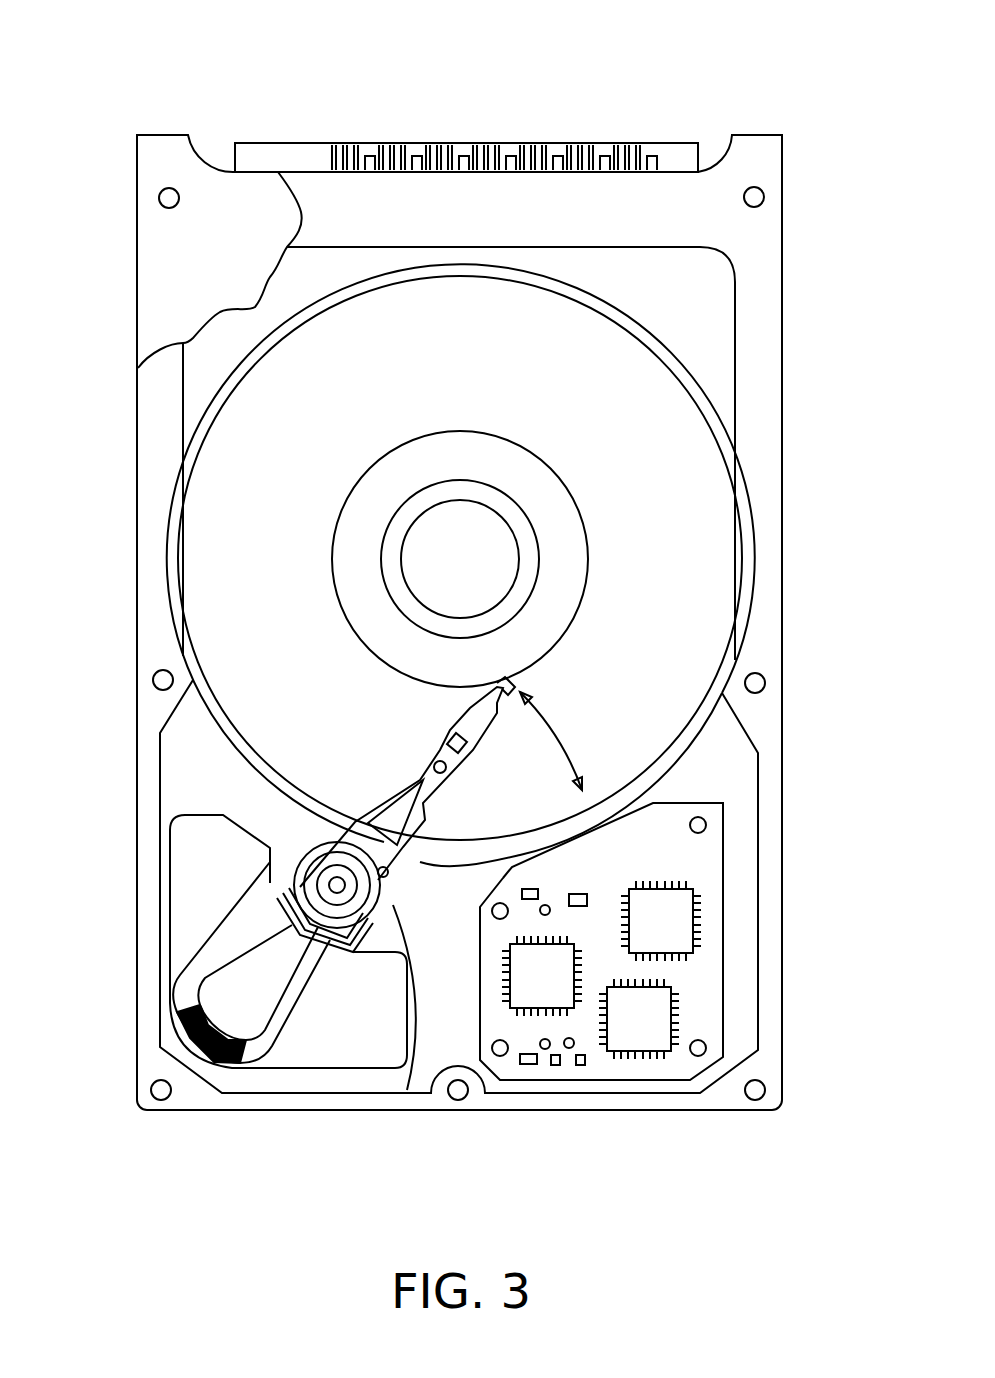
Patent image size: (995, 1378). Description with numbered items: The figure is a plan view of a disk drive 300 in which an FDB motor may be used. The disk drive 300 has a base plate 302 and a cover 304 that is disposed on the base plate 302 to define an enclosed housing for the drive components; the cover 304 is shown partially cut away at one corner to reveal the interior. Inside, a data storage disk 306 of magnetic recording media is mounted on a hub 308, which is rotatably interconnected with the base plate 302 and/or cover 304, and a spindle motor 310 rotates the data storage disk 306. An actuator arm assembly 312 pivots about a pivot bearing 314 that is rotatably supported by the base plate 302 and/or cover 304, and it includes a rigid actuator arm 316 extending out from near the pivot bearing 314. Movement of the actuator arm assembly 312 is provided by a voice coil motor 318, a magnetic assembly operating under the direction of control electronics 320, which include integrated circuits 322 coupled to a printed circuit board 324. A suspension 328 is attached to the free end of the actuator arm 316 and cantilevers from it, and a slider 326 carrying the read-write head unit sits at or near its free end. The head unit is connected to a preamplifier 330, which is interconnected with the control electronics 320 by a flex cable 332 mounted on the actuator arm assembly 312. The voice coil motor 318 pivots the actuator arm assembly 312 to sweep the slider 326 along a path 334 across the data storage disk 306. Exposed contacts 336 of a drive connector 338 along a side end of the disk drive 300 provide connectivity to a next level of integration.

The disk drive 300 is at (343, 42).
The base plate 302 is at (158, 622).
The cover 304 is at (165, 259).
The data storage disk 306 is at (295, 433).
The hub 308 is at (343, 513).
The spindle motor 310 is at (432, 577).
The actuator arm assembly 312 is at (430, 861).
The pivot bearing 314 is at (313, 888).
The actuator arm 316 is at (343, 850).
The voice coil motor 318 is at (150, 988).
The control electronics 320 is at (725, 1118).
The integrated circuit 322 is at (667, 917).
The printed circuit board 324 is at (697, 983).
The slider 326 is at (510, 680).
The suspension 328 is at (463, 725).
The preamplifier 330 is at (385, 895).
The flex cable 332 is at (400, 1098).
The path 334 is at (565, 740).
The exposed contacts 336 is at (655, 148).
The drive connector 338 is at (245, 152).